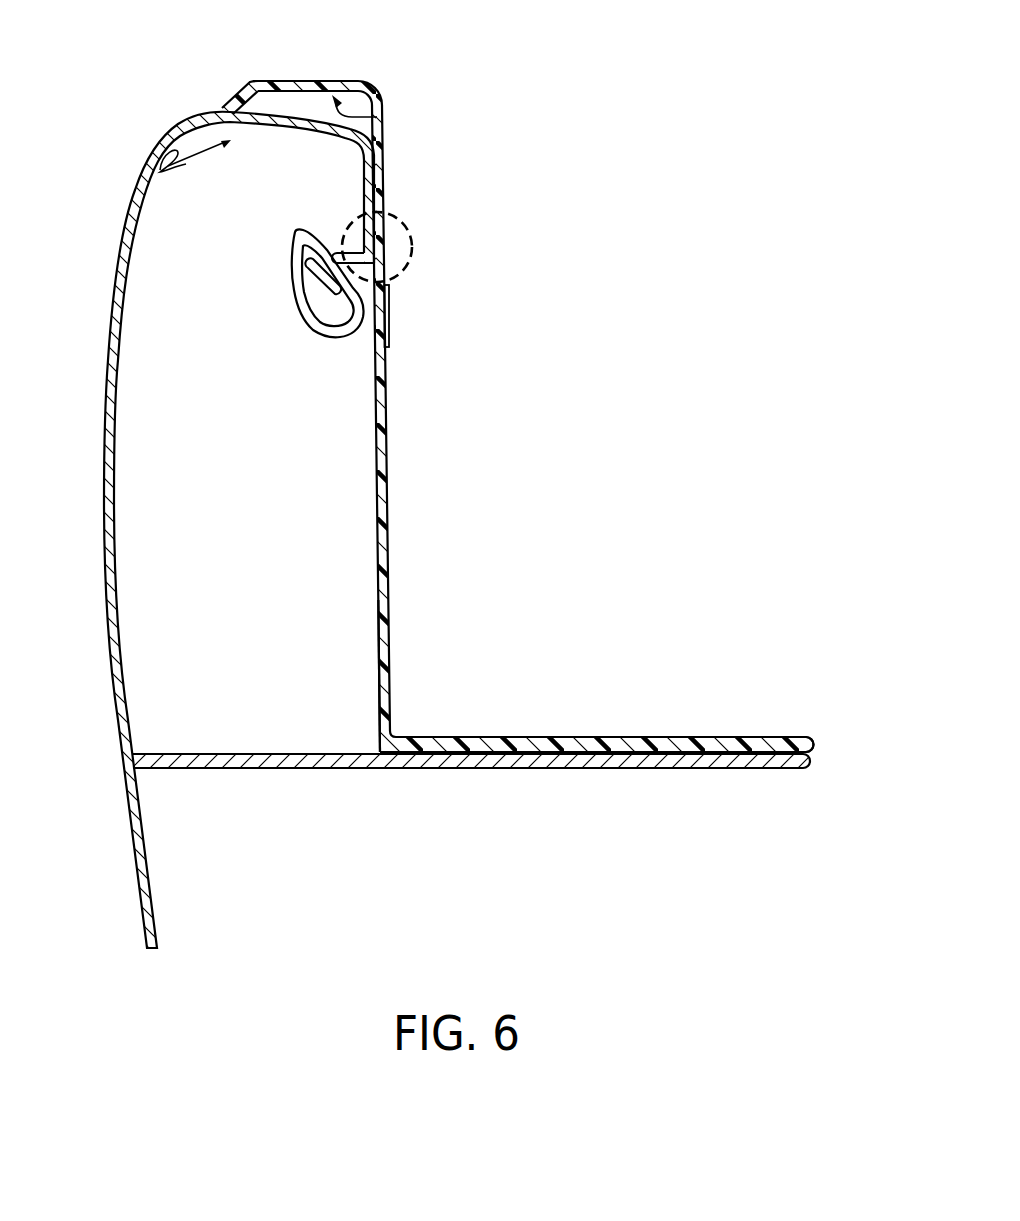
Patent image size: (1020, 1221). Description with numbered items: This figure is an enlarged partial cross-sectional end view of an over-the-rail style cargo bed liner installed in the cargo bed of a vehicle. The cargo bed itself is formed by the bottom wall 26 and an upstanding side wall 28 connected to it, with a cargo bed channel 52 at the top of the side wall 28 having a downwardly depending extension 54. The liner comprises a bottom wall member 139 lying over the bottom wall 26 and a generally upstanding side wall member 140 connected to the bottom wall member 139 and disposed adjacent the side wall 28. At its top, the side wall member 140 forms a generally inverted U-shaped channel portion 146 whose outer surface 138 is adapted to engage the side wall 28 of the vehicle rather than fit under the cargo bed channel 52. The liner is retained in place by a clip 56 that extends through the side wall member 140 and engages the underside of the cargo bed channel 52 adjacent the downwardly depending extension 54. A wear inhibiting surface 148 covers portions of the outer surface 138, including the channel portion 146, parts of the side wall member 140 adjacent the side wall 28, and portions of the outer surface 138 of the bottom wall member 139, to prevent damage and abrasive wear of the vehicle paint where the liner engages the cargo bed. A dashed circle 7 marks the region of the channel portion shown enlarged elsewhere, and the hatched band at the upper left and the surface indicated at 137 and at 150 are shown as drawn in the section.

The detail view circle 7 is at (413, 248).
The bottom wall 26 is at (216, 770).
The side wall 28 is at (106, 592).
The cargo bed channel 52 is at (148, 162).
The downwardly depending extension 54 is at (338, 250).
The clip 56 is at (293, 257).
The inner wall surface 137 is at (390, 652).
The outer surface 138 is at (377, 652).
The bottom wall member 139 is at (809, 743).
The side wall member 140 is at (385, 377).
The inverted U-shaped channel portion 146 is at (380, 108).
The wear inhibiting surface 148 is at (278, 80).
The tab 150 is at (232, 104).